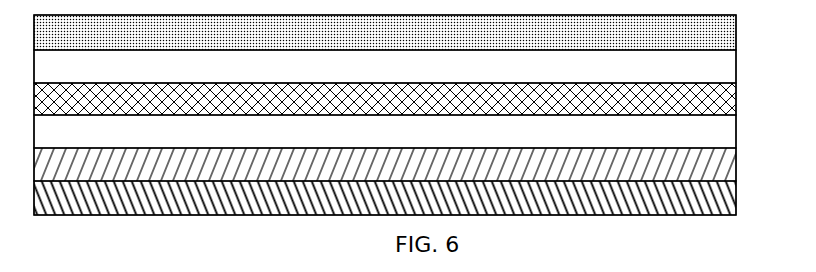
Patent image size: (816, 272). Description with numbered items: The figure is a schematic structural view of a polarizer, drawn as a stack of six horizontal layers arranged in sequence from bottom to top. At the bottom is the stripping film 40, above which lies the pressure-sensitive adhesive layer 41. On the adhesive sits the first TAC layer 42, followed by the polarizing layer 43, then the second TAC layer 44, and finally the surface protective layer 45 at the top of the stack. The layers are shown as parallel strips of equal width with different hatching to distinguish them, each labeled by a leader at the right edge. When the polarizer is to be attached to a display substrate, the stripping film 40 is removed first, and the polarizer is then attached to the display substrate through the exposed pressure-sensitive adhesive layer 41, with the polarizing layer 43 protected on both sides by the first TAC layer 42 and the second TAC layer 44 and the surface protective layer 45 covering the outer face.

The stripping film 40 is at (737, 198).
The pressure-sensitive adhesive layer 41 is at (737, 165).
The first TAC layer 42 is at (737, 132).
The polarizing layer 43 is at (737, 99).
The second TAC layer 44 is at (737, 67).
The surface protective layer 45 is at (737, 33).